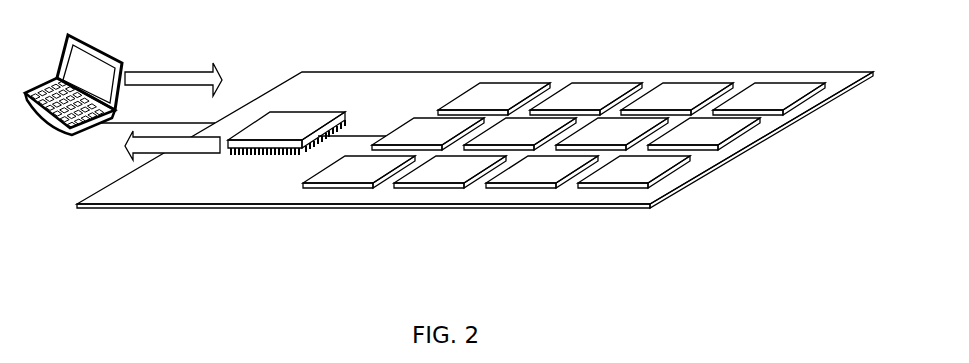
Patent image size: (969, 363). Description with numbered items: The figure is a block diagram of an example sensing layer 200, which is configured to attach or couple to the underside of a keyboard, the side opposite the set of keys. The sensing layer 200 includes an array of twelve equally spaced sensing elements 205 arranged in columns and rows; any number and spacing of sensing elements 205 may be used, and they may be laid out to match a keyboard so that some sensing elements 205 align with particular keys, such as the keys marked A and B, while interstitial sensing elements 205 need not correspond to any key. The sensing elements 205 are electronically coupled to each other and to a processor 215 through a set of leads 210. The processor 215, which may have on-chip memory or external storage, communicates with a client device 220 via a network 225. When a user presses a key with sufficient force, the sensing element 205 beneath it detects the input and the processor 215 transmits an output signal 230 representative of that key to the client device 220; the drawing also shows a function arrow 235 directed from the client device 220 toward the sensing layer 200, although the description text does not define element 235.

The sensing layer 200 is at (432, 72).
The sensing elements 205 is at (645, 219).
The set of leads 210 is at (736, 153).
The processor 215 is at (321, 112).
The client device 220 is at (95, 44).
The network 225 is at (112, 124).
The output signal 230 is at (192, 153).
The function input 235 is at (168, 71).